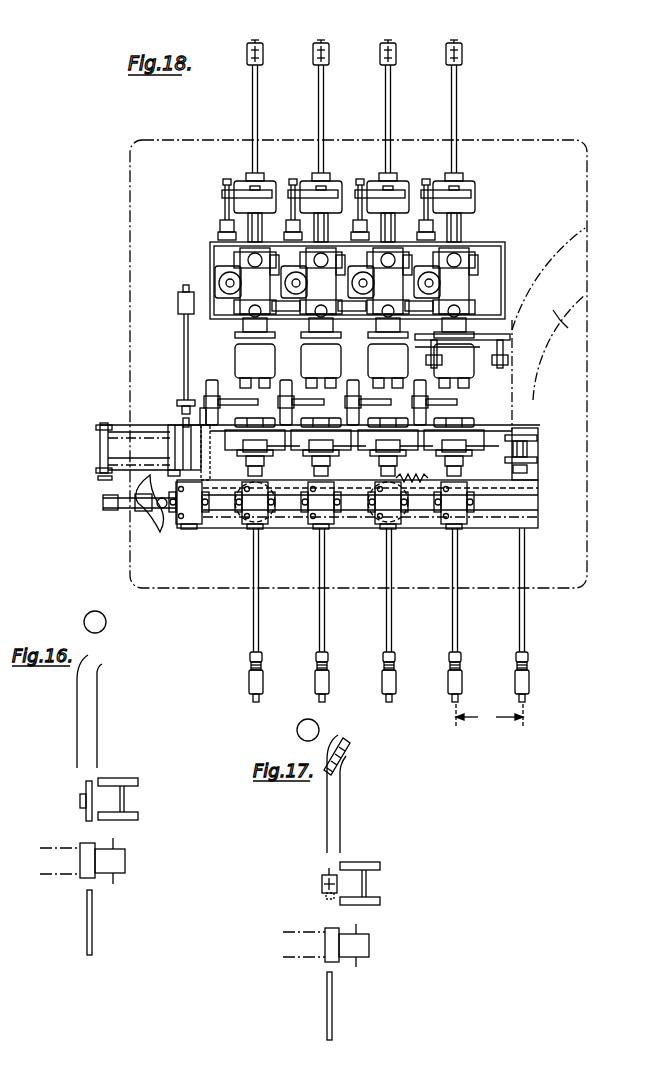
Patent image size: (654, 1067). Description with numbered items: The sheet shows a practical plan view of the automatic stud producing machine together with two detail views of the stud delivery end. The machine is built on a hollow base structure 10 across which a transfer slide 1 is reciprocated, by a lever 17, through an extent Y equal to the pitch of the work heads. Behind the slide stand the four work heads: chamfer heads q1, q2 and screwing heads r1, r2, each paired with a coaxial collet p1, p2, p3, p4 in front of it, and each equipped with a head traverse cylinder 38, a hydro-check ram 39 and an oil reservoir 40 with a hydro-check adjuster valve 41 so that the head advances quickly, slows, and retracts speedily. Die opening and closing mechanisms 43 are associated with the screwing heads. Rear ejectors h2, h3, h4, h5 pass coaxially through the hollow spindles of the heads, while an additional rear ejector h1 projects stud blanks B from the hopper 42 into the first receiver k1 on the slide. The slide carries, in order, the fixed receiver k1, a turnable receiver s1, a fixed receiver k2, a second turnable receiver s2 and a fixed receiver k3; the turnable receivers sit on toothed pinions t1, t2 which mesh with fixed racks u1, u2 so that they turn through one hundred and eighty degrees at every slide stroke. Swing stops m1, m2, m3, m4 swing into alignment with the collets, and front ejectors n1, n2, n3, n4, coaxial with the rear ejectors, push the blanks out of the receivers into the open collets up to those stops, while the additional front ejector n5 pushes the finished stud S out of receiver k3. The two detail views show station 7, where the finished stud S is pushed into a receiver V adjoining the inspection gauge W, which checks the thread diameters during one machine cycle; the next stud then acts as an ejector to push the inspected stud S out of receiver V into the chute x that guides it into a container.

In FIG. 18, the transfer slide 1 is at (528, 503).
In FIG. 18, the hollow base structure 10 is at (576, 508).
In FIG. 18, the lever 17 is at (140, 510).
In FIG. 18, the head traverse cylinder 38 is at (243, 300).
In FIG. 18, the hydro-check ram 39 is at (219, 223).
In FIG. 18, the oil reservoir 40 is at (218, 283).
In FIG. 18, the hydro-check adjuster valve 41 is at (226, 281).
In FIG. 18, the hopper 42 is at (126, 424).
In FIG. 18, the die opening and closing mechanisms 43 is at (506, 337).
In FIG. 16, the station 7 is at (95, 622).
In FIG. 17, the station 7 is at (308, 730).
In FIG. 18, the stud blank B is at (185, 444).
In FIG. 18, the inspection gauge W is at (530, 449).
In FIG. 16, the inspection gauge W is at (140, 803).
In FIG. 17, the inspection gauge W is at (382, 886).
In FIG. 16, the finished stud S is at (85, 786).
In FIG. 17, the finished stud S is at (349, 742).
In FIG. 16, the receiver V is at (79, 801).
In FIG. 17, the receiver V is at (321, 879).
In FIG. 18, the chute x is at (548, 314).
In FIG. 16, the chute x is at (97, 726).
In FIG. 17, the chute x is at (340, 818).
In FIG. 18, the extent of slide movement Y is at (489, 715).
In FIG. 18, the rear ejector h1 is at (184, 349).
In FIG. 18, the rear ejector h2 is at (249, 141).
In FIG. 18, the rear ejector h3 is at (315, 141).
In FIG. 18, the rear ejector h4 is at (382, 141).
In FIG. 18, the rear ejector h5 is at (448, 141).
In FIG. 18, the chamfer head q1 is at (238, 364).
In FIG. 18, the chamfer head q2 is at (303, 362).
In FIG. 18, the screwing head r1 is at (370, 362).
In FIG. 18, the screwing head r2 is at (470, 362).
In FIG. 18, the swing stop m1 is at (256, 401).
In FIG. 18, the swing stop m2 is at (306, 401).
In FIG. 18, the swing stop m3 is at (376, 402).
In FIG. 18, the swing stop m4 is at (444, 402).
In FIG. 18, the collet p1 is at (262, 428).
In FIG. 18, the collet p2 is at (332, 440).
In FIG. 18, the collet p3 is at (384, 440).
In FIG. 18, the collet p4 is at (472, 432).
In FIG. 18, the toothed rack u1 is at (338, 481).
In FIG. 18, the toothed rack u2 is at (462, 478).
In FIG. 18, the fixed receiver k1 is at (193, 529).
In FIG. 18, the fixed receiver k2 is at (327, 529).
In FIG. 18, the fixed receiver k3 is at (462, 523).
In FIG. 16, the fixed receiver k3 is at (95, 876).
In FIG. 17, the fixed receiver k3 is at (339, 960).
In FIG. 18, the turnable receiver s1 is at (264, 529).
In FIG. 18, the turnable receiver s2 is at (396, 529).
In FIG. 18, the toothed pinion t1 is at (250, 523).
In FIG. 18, the toothed pinion t2 is at (382, 524).
In FIG. 18, the front ejector n1 is at (253, 629).
In FIG. 18, the front ejector n2 is at (319, 629).
In FIG. 18, the front ejector n3 is at (386, 629).
In FIG. 18, the front ejector n4 is at (452, 629).
In FIG. 18, the front ejector n5 is at (519, 629).
In FIG. 16, the front ejector n5 is at (104, 922).
In FIG. 17, the front ejector n5 is at (343, 1006).